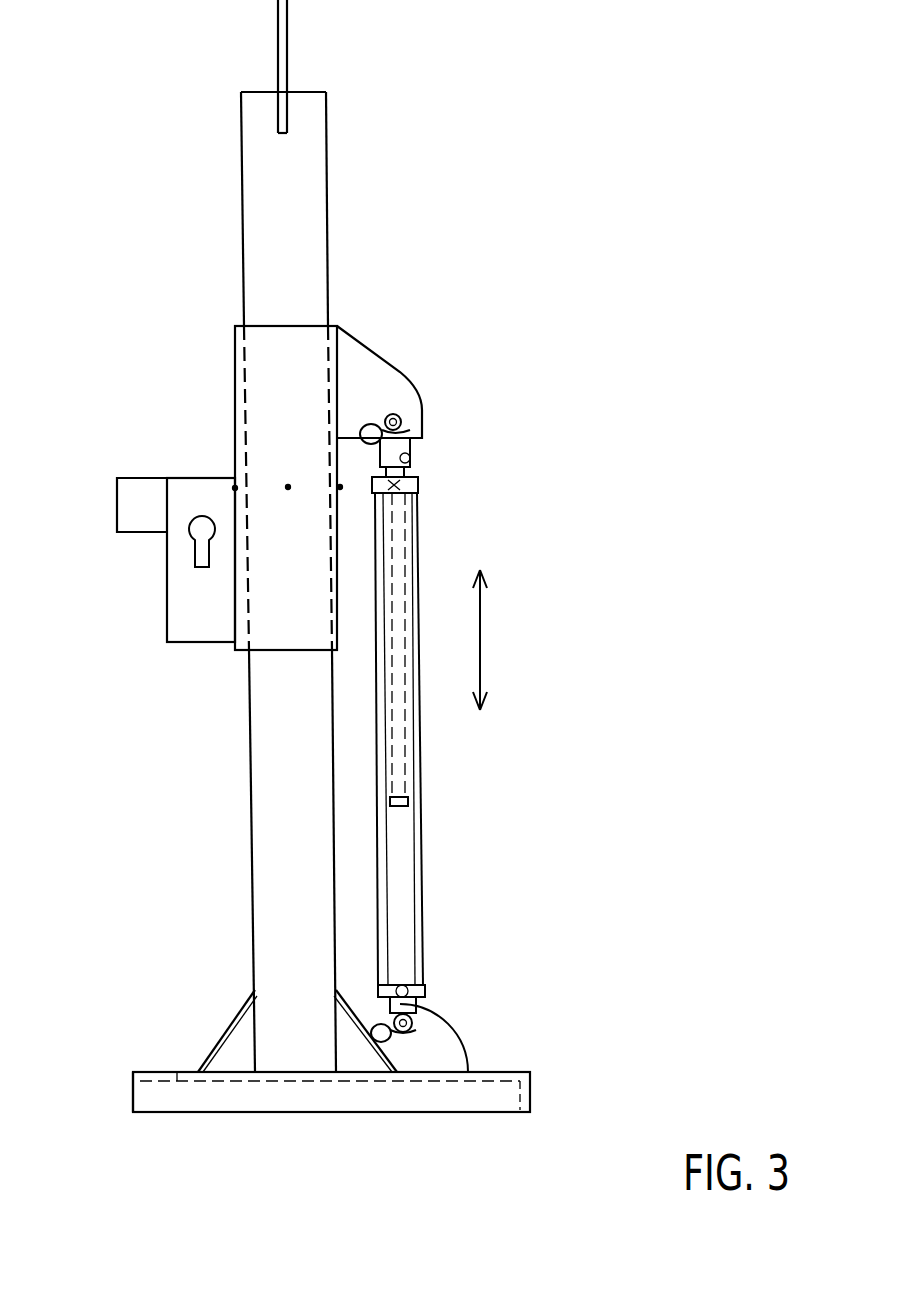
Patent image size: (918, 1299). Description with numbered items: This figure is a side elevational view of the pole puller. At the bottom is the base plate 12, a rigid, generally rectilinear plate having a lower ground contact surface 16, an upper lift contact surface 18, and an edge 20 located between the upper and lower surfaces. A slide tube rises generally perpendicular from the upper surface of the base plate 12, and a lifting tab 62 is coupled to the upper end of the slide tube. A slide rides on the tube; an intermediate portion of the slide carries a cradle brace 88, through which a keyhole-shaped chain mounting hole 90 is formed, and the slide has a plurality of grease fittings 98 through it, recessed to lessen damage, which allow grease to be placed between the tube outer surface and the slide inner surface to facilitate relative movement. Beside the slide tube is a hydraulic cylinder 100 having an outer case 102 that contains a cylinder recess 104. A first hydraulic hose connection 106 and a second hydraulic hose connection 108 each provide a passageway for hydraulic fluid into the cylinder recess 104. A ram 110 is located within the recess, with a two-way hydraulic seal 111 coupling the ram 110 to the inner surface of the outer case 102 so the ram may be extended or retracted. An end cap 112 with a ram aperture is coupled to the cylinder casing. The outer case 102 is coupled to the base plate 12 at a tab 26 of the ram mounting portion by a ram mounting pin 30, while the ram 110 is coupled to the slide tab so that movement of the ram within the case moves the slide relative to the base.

The base plate 12 is at (497, 1097).
The lower ground contact surface 16 is at (508, 1072).
The upper lift contact surface 18 is at (203, 1112).
The edge 20 is at (133, 1094).
The tab 26 is at (436, 1050).
The ram mounting pin 30 is at (410, 1023).
The lifting tab 62 is at (286, 12).
The cradle brace 88 is at (185, 618).
The chain mounting hole 90 is at (196, 545).
The grease fittings 98 is at (288, 487).
The hydraulic cylinder 100 is at (438, 871).
The outer case 102 is at (418, 908).
The cylinder recess 104 is at (408, 848).
The first hydraulic hose connection 106 is at (405, 468).
The second hydraulic hose connection 108 is at (405, 985).
The ram 110 is at (393, 578).
The hydraulic seal 111 is at (398, 797).
The end cap 112 is at (418, 483).